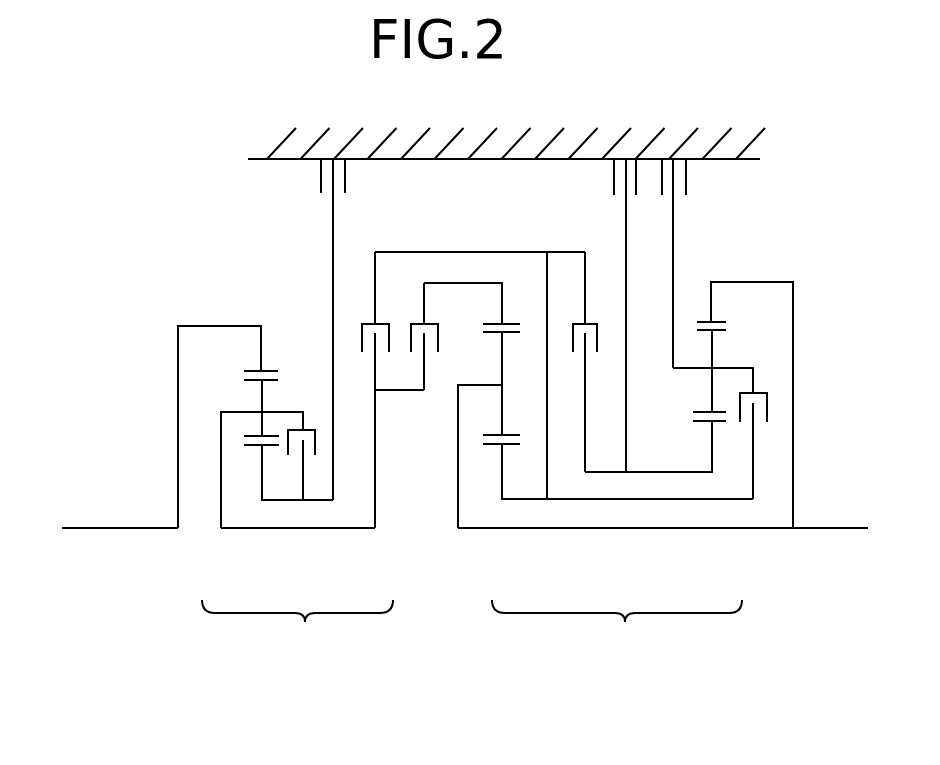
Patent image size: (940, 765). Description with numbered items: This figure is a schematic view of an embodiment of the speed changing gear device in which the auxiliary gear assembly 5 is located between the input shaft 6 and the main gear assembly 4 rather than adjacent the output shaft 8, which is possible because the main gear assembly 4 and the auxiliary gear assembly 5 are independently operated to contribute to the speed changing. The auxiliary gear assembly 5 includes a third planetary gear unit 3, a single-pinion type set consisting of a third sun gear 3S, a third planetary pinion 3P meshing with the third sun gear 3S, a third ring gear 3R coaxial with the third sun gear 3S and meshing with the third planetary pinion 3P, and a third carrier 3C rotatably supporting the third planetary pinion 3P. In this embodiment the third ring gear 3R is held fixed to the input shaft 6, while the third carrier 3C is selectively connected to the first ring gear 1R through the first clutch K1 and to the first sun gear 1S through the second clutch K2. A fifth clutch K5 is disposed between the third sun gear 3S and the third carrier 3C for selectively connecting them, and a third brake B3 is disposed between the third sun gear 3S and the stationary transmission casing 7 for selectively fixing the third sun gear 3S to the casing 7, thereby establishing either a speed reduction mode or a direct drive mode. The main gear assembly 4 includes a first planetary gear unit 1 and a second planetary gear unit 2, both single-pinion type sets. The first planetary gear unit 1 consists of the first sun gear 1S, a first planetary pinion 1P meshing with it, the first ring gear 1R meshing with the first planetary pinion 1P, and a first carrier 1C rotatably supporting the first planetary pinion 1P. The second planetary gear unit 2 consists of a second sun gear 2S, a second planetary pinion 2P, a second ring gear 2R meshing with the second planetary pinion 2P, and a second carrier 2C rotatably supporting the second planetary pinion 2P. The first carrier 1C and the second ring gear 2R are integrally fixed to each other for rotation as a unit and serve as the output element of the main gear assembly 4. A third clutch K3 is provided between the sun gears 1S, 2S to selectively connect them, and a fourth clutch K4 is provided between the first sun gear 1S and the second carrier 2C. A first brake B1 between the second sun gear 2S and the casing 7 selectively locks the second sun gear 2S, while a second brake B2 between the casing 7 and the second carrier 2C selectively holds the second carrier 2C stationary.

The transmission casing 7 is at (637, 152).
The first brake B1 is at (600, 181).
The second brake B2 is at (698, 181).
The third brake B3 is at (307, 182).
The first clutch K1 is at (456, 317).
The second clutch K2 is at (387, 315).
The third clutch K3 is at (590, 322).
The fourth clutch K4 is at (764, 393).
The fifth clutch K5 is at (305, 435).
The first planetary gear unit 1 is at (576, 387).
The first ring gear 1R is at (507, 323).
The first planetary pinion 1P is at (510, 433).
The first carrier 1C is at (478, 386).
The first sun gear 1S is at (490, 447).
The second planetary gear unit 2 is at (714, 405).
The second ring gear 2R is at (712, 322).
The second planetary pinion 2P is at (713, 348).
The second carrier 2C is at (688, 370).
The second sun gear 2S is at (718, 425).
The third planetary gear unit 3 is at (222, 435).
The third ring gear 3R is at (267, 371).
The third planetary pinion 3P is at (262, 422).
The third carrier 3C is at (233, 411).
The third sun gear 3S is at (252, 448).
The main gear assembly 4 is at (617, 631).
The auxiliary gear assembly 5 is at (297, 632).
The input shaft 6 is at (97, 527).
The output shaft 8 is at (847, 523).